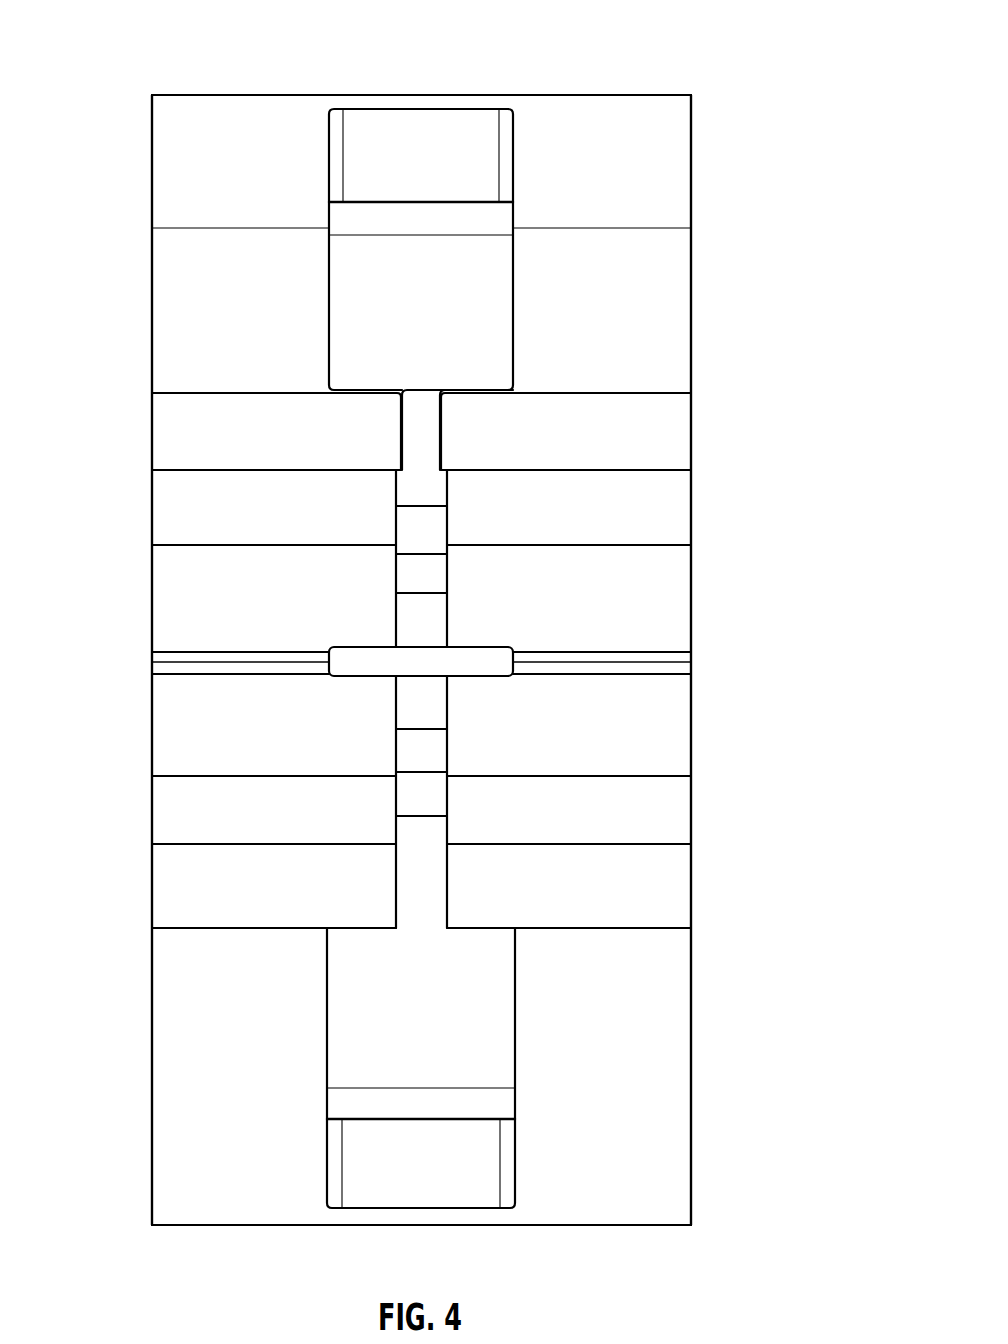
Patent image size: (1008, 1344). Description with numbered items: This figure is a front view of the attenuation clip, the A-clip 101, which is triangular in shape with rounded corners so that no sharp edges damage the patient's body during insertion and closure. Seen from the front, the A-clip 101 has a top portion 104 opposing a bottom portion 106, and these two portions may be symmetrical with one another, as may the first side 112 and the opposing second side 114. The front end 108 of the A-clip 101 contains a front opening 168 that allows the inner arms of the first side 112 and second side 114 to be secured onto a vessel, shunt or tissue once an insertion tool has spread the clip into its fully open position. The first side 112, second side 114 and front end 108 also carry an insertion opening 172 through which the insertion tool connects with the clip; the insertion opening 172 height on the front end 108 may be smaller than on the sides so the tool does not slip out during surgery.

The A-clip 101 is at (612, 38).
The top portion 104 is at (152, 222).
The bottom portion 106 is at (692, 172).
The front end 108 is at (672, 728).
The first side 112 is at (218, 110).
The second side 114 is at (232, 1198).
The front opening 168 is at (400, 660).
The insertion opening 172 is at (382, 307).